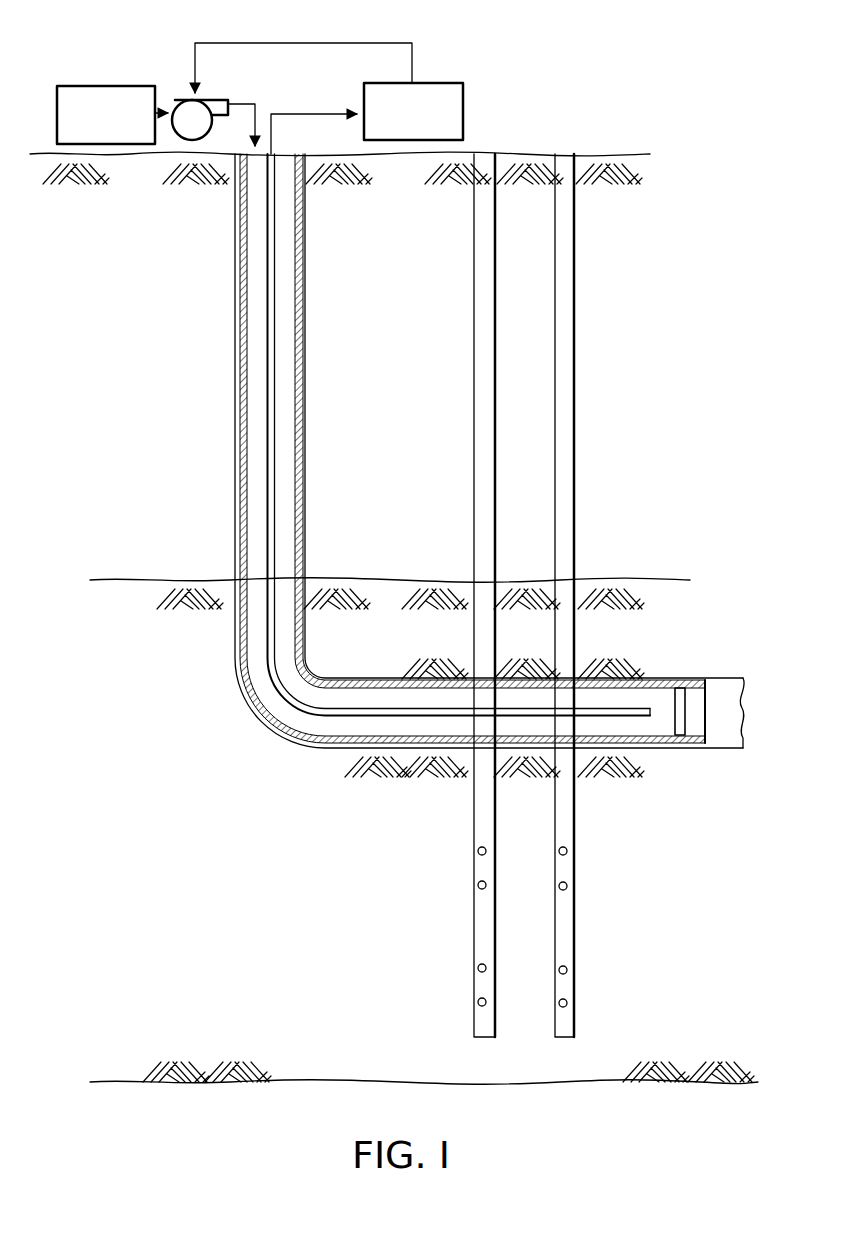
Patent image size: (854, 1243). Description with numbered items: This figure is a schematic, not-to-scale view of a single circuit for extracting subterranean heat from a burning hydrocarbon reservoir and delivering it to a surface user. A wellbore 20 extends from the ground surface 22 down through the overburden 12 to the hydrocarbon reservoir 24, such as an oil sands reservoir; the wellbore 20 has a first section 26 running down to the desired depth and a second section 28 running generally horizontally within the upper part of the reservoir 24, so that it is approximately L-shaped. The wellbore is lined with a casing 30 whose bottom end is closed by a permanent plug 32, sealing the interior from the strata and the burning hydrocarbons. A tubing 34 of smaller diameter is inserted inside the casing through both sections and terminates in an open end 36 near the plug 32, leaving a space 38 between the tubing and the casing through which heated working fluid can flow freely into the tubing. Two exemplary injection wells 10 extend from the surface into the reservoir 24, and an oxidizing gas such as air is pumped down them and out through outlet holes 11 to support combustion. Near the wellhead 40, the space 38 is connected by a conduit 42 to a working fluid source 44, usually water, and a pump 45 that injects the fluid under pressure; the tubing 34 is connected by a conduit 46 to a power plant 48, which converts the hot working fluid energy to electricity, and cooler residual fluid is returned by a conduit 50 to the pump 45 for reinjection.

The injection well 10 is at (473, 392).
The outlet hole 11 is at (478, 968).
The overburden 12 is at (643, 268).
The wellbore 20 is at (234, 252).
The ground surface 22 is at (530, 154).
The hydrocarbon reservoir 24 is at (441, 643).
The first section 26 is at (320, 365).
The second section 28 is at (618, 670).
The casing 30 is at (288, 400).
The plug 32 is at (688, 707).
The tubing 34 is at (266, 362).
The open end 36 is at (662, 708).
The space 38 is at (287, 253).
The wellhead 40 is at (305, 154).
The conduit 42 is at (245, 103).
The working fluid source 44 is at (103, 85).
The pump 45 is at (190, 98).
The conduit 46 is at (304, 113).
The power plant 48 is at (445, 83).
The conduit 50 is at (283, 43).